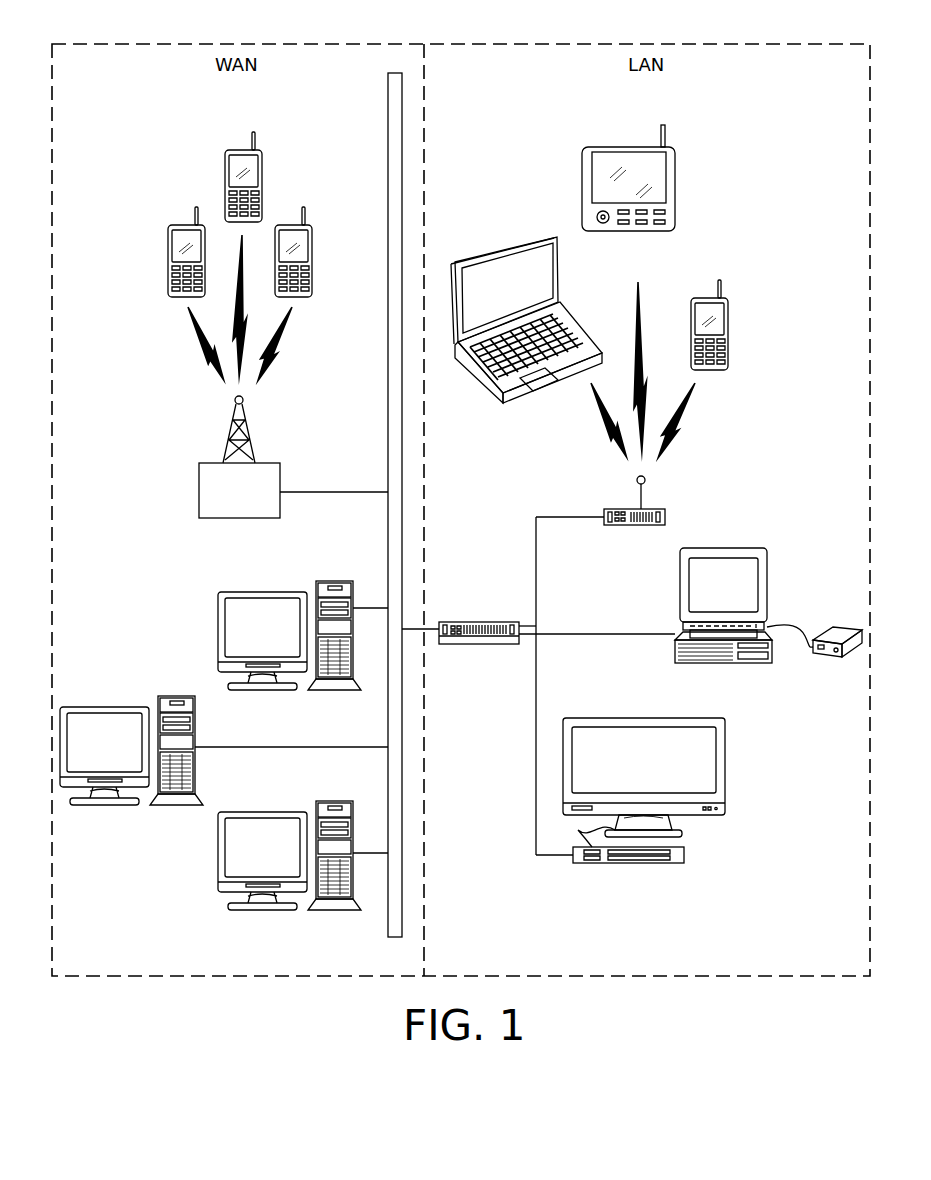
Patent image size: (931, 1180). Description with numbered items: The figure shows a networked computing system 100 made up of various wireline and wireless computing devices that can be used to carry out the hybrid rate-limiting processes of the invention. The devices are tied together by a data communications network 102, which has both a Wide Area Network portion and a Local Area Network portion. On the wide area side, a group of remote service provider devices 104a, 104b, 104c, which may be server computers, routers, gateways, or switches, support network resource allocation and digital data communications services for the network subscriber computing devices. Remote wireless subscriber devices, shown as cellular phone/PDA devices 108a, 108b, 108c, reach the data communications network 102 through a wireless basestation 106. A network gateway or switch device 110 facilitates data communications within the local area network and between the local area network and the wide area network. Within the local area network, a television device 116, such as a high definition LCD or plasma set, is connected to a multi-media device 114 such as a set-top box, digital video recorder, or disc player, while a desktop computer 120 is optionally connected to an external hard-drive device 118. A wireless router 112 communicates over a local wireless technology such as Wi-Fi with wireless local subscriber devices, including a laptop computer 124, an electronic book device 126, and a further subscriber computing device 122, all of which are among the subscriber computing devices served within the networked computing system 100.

The networked computing system 100 is at (178, 36).
The data communications network 102 is at (388, 93).
The remote service provider device 104a is at (332, 581).
The remote service provider device 104b is at (173, 697).
The remote service provider device 104c is at (332, 801).
The wireless basestation 106 is at (207, 463).
The cellular phone/PDA device 108a is at (225, 180).
The cellular phone/PDA device 108b is at (168, 255).
The cellular phone/PDA device 108c is at (313, 252).
The network gateway or switch device 110 is at (470, 622).
The wireless router 112 is at (622, 509).
The multi-media device 114 is at (684, 855).
The television device 116 is at (725, 752).
The external hard-drive device 118 is at (832, 660).
The desktop computer 120 is at (767, 585).
The subscriber computing device 122 is at (729, 330).
The laptop computer 124 is at (490, 260).
The electronic book device 126 is at (625, 147).